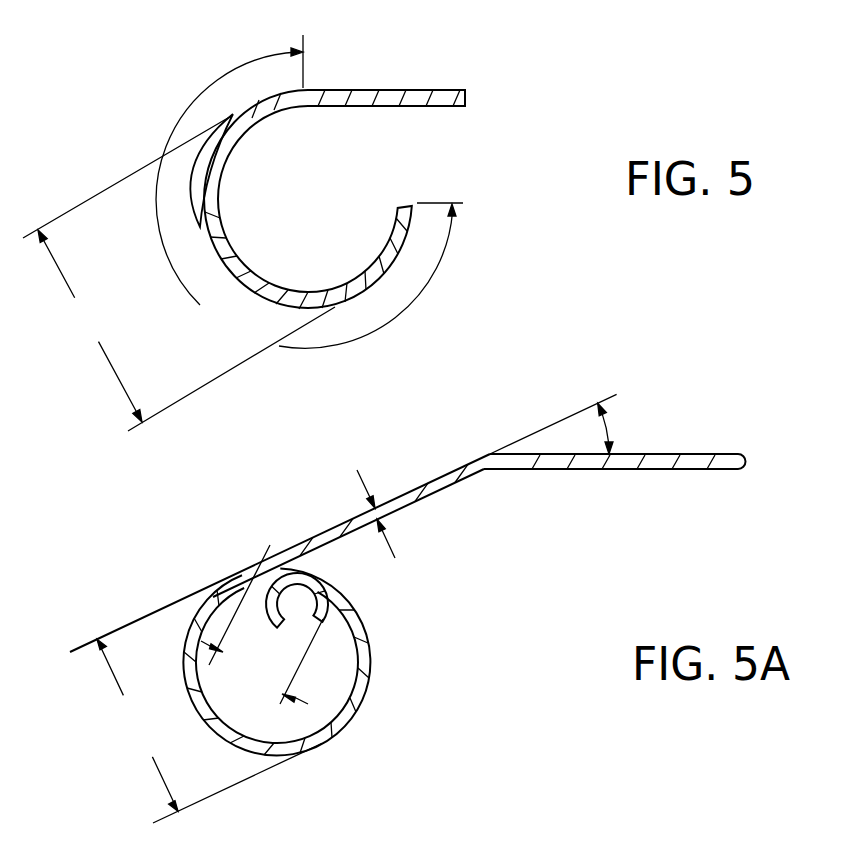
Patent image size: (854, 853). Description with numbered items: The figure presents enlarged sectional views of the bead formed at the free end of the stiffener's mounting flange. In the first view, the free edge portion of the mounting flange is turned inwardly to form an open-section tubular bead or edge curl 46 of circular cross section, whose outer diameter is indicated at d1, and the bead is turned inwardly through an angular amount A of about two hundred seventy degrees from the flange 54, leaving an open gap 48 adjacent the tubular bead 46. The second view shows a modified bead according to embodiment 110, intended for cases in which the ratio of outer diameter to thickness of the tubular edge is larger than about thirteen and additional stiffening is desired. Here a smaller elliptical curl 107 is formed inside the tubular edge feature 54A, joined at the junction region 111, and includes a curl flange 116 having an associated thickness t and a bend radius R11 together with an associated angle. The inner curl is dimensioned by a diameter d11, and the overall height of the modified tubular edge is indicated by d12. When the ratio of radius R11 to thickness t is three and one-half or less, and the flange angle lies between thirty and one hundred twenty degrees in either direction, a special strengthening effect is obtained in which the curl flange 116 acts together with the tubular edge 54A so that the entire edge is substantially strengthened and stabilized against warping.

In FIG. 5, the hook-shaped spring strip 54 is at (426, 88).
In FIG. 5, the open gap 48 is at (398, 153).
In FIG. 5, the tubular bead 46 is at (204, 241).
In FIG. 5, the angular amount A is at (309, 191).
In FIG. 5, the outer diameter d1 is at (179, 273).
In FIG. 5A, the tubular edge feature 54A is at (352, 716).
In FIG. 5A, the elliptical curl 107 is at (253, 613).
In FIG. 5A, the curl flange 116 is at (423, 485).
In FIG. 5A, the strip-to-coil junction 111 is at (285, 549).
In FIG. 5A, the embodiment 110 is at (472, 590).
In FIG. 5A, the radius R11 is at (496, 483).
In FIG. 5A, the thickness t is at (370, 499).
In FIG. 5A, the inner curl diameter d11 is at (262, 624).
In FIG. 5A, the coil outer height d12 is at (209, 731).